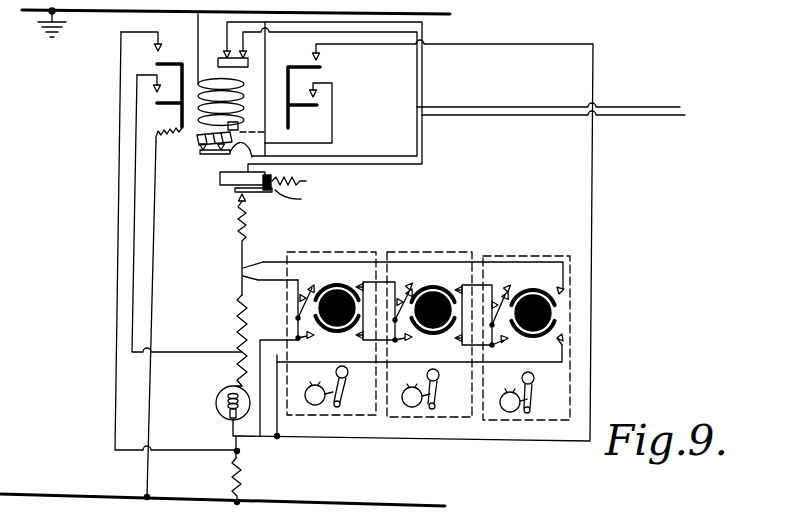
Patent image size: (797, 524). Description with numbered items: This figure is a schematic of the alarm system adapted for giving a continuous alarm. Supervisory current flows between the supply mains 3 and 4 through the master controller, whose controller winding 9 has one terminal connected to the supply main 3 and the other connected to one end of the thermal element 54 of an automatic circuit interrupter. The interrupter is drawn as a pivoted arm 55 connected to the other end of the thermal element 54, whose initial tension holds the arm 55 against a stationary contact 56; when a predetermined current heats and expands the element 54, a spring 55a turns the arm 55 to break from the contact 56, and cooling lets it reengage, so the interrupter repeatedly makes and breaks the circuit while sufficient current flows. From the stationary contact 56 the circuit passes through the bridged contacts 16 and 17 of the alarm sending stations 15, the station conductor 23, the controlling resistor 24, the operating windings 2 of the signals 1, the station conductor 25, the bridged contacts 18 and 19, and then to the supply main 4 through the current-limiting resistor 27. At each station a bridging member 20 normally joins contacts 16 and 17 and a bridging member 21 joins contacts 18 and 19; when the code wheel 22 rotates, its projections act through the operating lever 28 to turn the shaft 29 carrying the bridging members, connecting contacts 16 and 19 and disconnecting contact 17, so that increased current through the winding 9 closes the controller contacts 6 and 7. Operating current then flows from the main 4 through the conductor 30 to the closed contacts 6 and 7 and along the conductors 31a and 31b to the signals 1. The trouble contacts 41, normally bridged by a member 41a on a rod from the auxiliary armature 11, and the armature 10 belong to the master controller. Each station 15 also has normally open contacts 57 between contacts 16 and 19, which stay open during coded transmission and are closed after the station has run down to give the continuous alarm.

The signal 1 is at (221, 399).
The operating winding 2 is at (217, 411).
The supply main 3 is at (97, 14).
The supply main 4 is at (83, 495).
The controller contact 6 is at (177, 63).
The controller contact 7 is at (154, 49).
The controller winding 9 is at (198, 114).
The armature 10 is at (204, 150).
The auxiliary armature 11 is at (230, 156).
The alarm sending station 15 is at (568, 258).
The stationary contact 16 is at (414, 289).
The stationary contact 17 is at (460, 285).
The stationary contact 18 is at (560, 334).
The stationary contact 19 is at (505, 341).
The bridging member 20 is at (540, 291).
The bridging member 21 is at (552, 347).
The code wheel 22 is at (511, 411).
The station conductor 23 is at (545, 263).
The controlling resistor 24 is at (239, 318).
The station conductor 25 is at (497, 363).
The current-limiting resistor 27 is at (245, 479).
The operating lever 28 is at (532, 403).
The shaft 29 is at (535, 378).
The conductor 30 is at (148, 409).
The conductor 31a is at (135, 258).
The conductor 31b is at (118, 303).
The trouble contacts 41 is at (227, 56).
The bridging member 41a is at (222, 62).
The thermal element 54 is at (226, 185).
The pivoted arm 55 is at (266, 193).
The spring 55a is at (302, 180).
The stationary contact 56 is at (240, 203).
The normally open contacts 57 is at (310, 284).